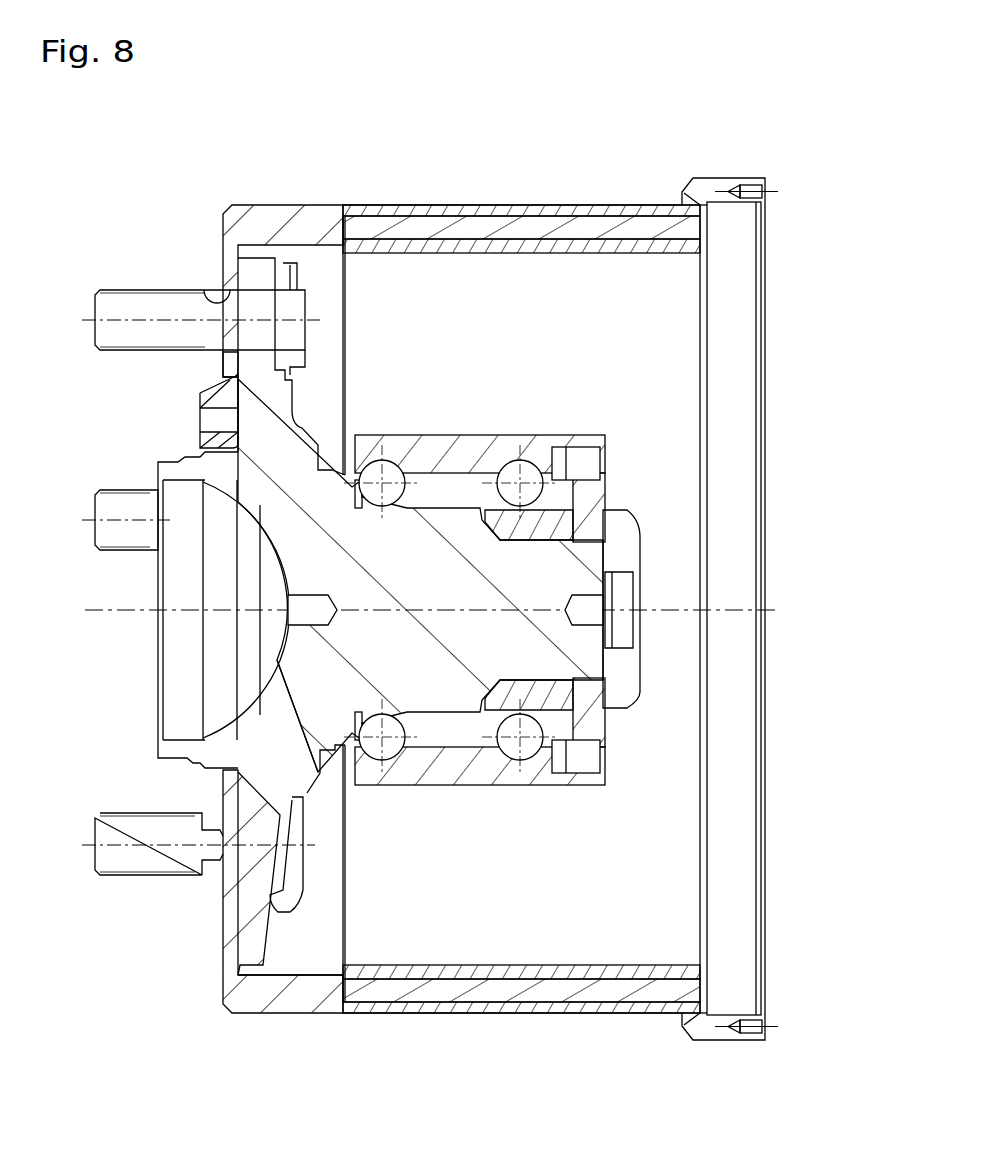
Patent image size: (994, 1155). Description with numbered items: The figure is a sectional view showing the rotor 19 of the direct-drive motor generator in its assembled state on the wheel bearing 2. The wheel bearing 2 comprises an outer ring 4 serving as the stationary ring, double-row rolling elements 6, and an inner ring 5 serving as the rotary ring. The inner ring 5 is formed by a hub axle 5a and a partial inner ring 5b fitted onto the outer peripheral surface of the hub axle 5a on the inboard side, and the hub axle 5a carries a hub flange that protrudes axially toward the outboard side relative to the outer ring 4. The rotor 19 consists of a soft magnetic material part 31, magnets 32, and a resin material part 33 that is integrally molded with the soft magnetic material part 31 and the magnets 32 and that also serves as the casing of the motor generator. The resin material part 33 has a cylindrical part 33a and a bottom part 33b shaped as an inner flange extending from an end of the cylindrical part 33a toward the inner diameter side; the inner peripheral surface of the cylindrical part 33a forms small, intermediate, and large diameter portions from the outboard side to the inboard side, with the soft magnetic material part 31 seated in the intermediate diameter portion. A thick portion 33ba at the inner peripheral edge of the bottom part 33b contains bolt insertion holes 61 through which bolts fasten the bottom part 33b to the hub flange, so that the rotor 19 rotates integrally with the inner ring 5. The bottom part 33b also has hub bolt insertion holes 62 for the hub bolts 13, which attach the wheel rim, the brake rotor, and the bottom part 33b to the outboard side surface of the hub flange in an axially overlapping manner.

The rotor 19 is at (260, 183).
The wheel bearing 2 is at (84, 592).
The outer ring 4 is at (350, 765).
The inner ring 5 is at (380, 578).
The hub axle 5a is at (560, 655).
The partial inner ring 5b is at (578, 716).
The double-row rolling elements 6 is at (480, 718).
The hub bolts 13 is at (133, 303).
The soft magnetic material part 31 is at (628, 220).
The magnets 32 is at (648, 250).
The resin material part 33 is at (326, 214).
The cylindrical part 33a is at (503, 210).
The bottom part 33b is at (232, 372).
The thick portion 33ba is at (200, 443).
The bolt insertion holes 61 is at (252, 421).
The hub bolt insertion holes 62 is at (204, 292).